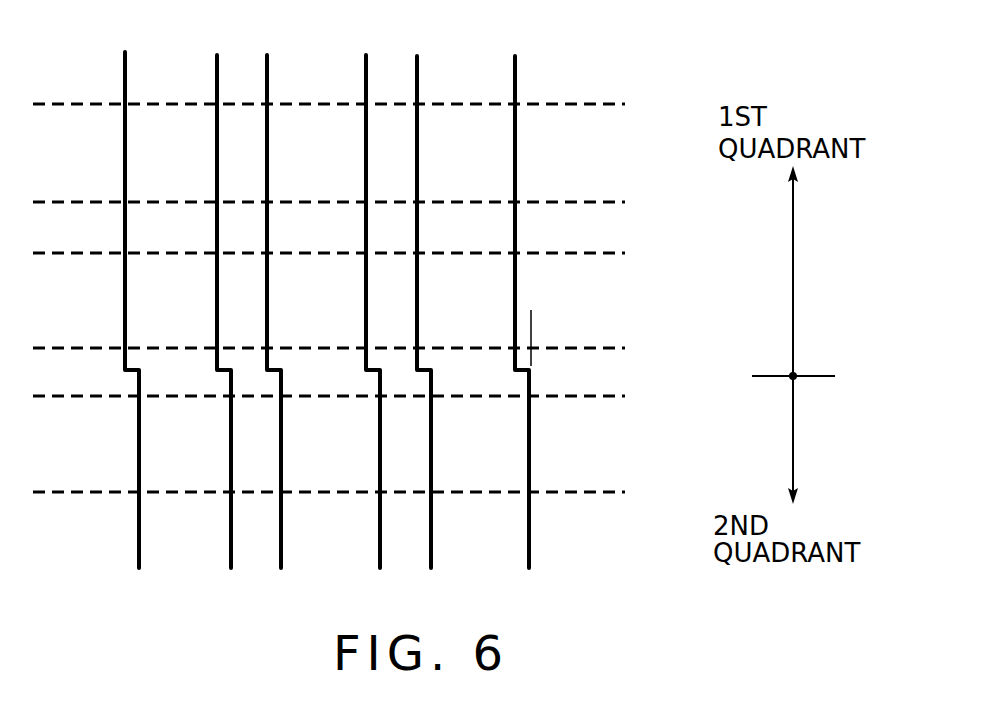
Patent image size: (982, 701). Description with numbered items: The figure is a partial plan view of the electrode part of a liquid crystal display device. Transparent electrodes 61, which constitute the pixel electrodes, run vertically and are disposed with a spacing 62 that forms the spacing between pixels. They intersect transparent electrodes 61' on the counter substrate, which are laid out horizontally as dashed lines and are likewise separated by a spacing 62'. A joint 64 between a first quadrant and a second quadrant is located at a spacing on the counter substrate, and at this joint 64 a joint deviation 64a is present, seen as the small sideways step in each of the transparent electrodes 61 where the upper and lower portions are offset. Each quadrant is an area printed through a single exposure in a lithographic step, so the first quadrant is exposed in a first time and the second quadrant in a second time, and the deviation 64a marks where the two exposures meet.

The transparent electrodes 61 is at (327, 284).
The spacing 62 is at (386, 43).
The transparent electrodes 61' is at (362, 298).
The gap between orthogonal electrode groups 62' is at (641, 228).
The joint 64 is at (581, 375).
The joint deviation 64a is at (480, 328).